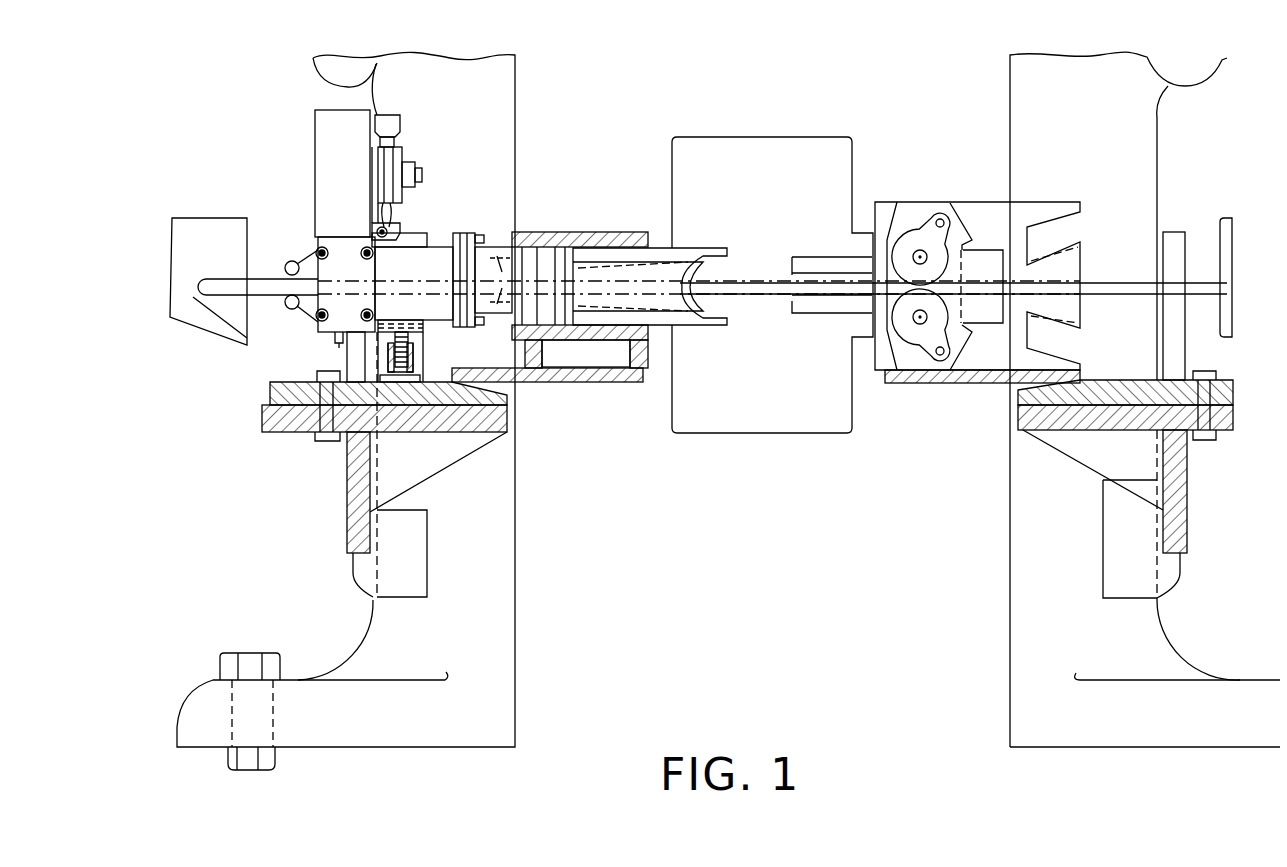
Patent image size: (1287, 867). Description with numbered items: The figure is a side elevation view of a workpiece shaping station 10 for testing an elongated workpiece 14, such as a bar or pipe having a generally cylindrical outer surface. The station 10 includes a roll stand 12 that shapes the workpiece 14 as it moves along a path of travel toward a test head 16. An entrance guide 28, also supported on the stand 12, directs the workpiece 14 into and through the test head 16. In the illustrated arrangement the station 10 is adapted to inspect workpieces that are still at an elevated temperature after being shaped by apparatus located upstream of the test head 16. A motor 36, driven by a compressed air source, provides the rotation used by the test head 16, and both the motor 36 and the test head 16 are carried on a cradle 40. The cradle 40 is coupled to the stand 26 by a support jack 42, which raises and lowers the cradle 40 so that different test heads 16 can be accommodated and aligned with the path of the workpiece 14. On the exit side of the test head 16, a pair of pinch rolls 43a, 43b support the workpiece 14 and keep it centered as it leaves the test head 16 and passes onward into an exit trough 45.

The workpiece shaping station 10 is at (527, 474).
The roll stand 12 is at (490, 577).
The workpiece 14 is at (218, 278).
The test head 16 is at (433, 255).
The stand 26 is at (482, 420).
The entrance guide 28 is at (690, 243).
The motor 36 is at (390, 168).
The cradle 40 is at (415, 308).
The support jack 42 is at (388, 357).
The pinch roll 43a is at (290, 260).
The pinch roll 43b is at (288, 308).
The exit trough 45 is at (200, 300).